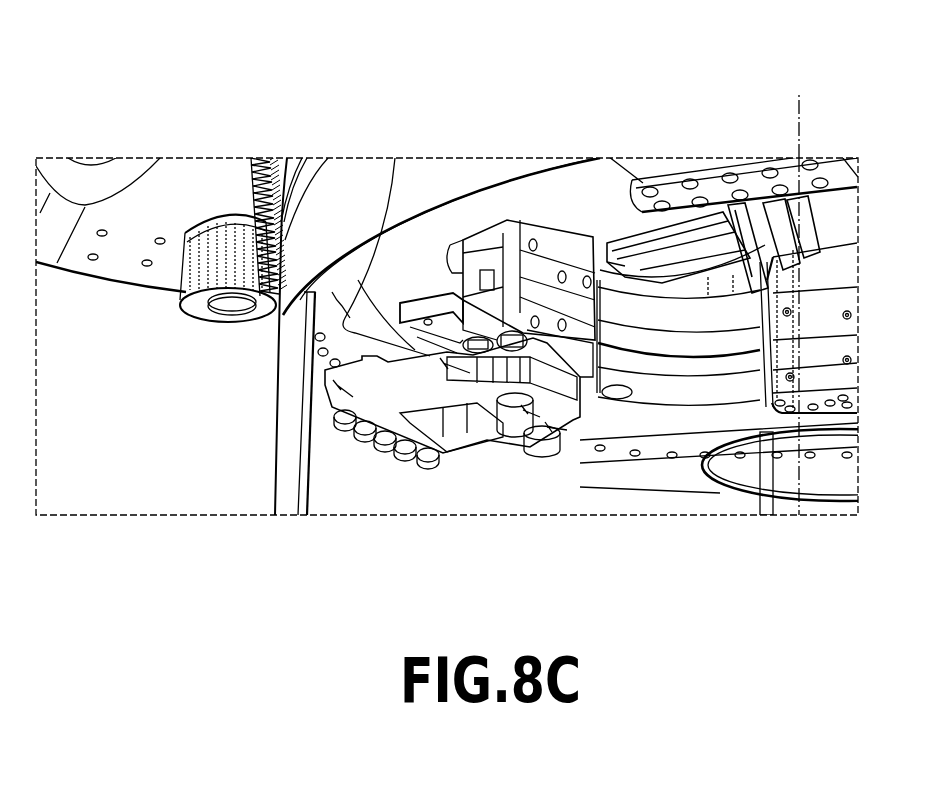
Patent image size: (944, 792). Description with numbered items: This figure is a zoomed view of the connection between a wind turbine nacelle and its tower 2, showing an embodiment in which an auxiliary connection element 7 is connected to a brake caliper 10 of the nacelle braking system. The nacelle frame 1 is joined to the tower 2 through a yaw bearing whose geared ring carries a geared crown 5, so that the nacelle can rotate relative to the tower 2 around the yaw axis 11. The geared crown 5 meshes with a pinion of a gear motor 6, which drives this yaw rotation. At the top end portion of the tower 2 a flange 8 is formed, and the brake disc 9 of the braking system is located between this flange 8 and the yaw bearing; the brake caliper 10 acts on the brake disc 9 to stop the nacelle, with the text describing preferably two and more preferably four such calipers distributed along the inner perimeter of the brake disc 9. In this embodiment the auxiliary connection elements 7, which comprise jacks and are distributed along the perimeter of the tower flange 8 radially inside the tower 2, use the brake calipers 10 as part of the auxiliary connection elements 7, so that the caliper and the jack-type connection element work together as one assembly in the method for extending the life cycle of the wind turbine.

The nacelle frame 1 is at (163, 165).
The tower 2 is at (292, 460).
The geared crown 5 is at (256, 159).
The gear motor 6 is at (220, 272).
The auxiliary connection element 7 is at (584, 410).
The flange 8 is at (395, 158).
The brake disc 9 is at (427, 250).
The brake caliper 10 is at (537, 285).
The yaw axis 11 is at (799, 112).